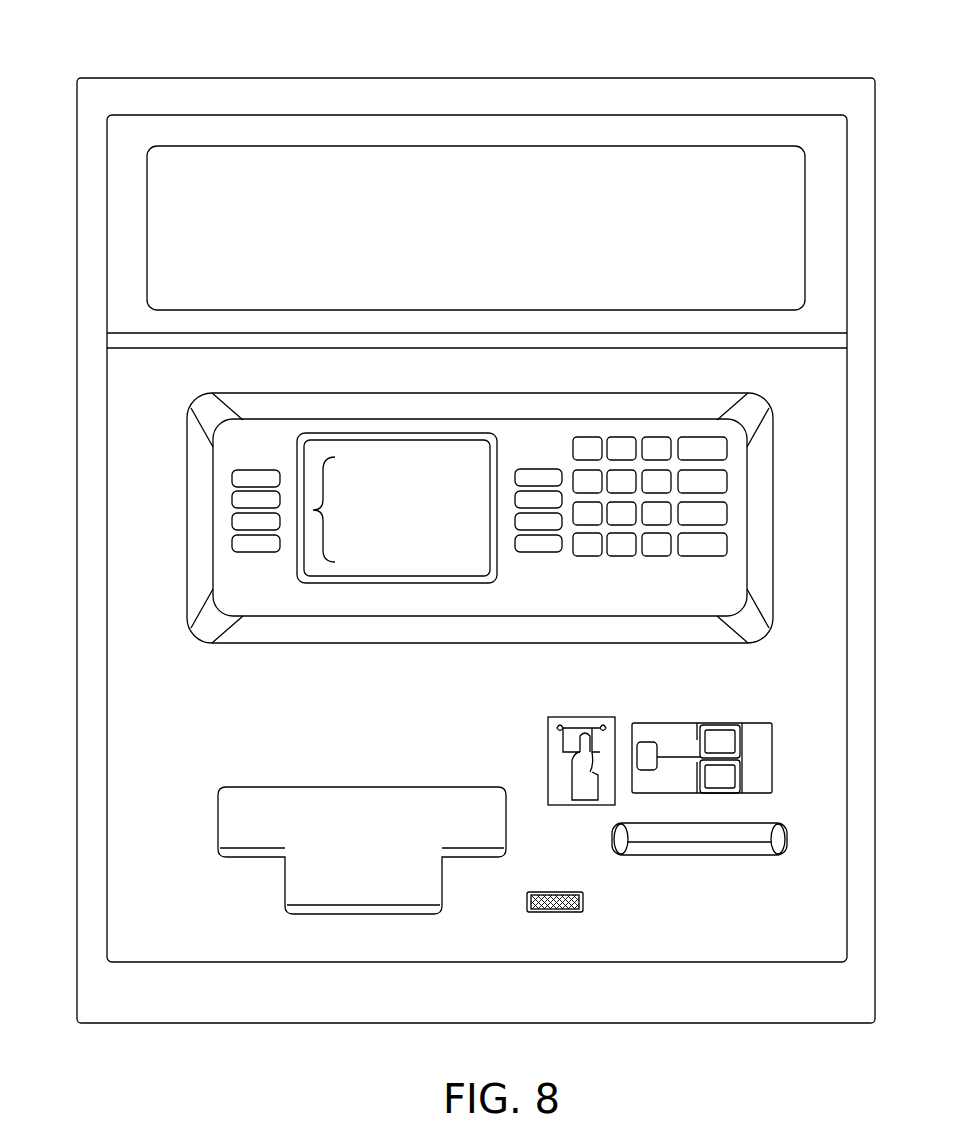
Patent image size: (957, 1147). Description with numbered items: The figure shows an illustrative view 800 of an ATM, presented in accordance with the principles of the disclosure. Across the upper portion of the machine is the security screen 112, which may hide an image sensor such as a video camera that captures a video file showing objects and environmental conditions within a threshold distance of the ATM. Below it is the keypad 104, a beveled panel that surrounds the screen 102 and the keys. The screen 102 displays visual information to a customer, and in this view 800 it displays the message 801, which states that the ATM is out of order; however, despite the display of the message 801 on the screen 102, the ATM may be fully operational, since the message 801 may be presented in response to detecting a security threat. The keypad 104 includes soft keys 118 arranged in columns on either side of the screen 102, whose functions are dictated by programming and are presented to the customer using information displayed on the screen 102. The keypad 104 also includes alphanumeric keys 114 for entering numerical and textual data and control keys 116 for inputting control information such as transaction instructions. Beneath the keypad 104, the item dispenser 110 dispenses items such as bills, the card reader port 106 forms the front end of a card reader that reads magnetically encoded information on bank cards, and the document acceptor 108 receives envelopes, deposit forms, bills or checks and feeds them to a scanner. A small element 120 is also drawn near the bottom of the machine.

The view 800 is at (124, 36).
The security screen 112 is at (719, 144).
The keypad 104 is at (530, 598).
The screen 102 is at (424, 437).
The message 801 is at (312, 510).
The soft keys 118 is at (260, 458).
The alphanumeric keys 114 is at (577, 557).
The control keys 116 is at (708, 430).
The item dispenser 110 is at (247, 787).
The card reader port 106 is at (755, 722).
The document acceptor 108 is at (770, 823).
The speaker 120 is at (568, 912).